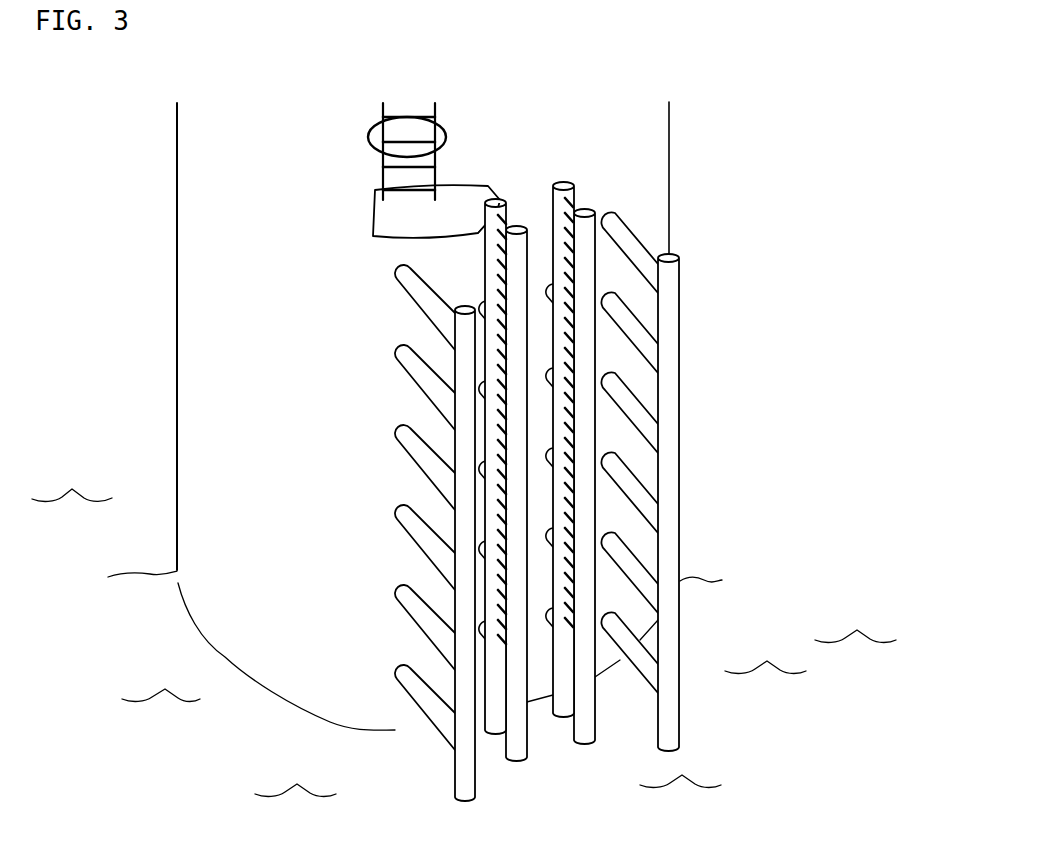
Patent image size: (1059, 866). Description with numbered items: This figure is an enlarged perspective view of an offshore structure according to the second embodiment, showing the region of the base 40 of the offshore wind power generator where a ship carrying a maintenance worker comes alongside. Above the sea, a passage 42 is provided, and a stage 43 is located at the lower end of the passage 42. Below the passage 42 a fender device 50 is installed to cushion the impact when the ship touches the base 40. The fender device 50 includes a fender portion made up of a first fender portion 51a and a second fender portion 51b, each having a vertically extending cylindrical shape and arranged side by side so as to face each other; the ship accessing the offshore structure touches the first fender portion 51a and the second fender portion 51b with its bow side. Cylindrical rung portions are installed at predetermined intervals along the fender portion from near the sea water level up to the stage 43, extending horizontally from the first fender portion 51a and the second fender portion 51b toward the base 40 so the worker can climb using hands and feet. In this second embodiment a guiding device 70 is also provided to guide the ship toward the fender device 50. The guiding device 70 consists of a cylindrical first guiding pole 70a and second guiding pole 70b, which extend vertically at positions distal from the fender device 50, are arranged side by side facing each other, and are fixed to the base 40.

The base 40 is at (658, 215).
The passage 42 is at (441, 116).
The stage 43 is at (387, 226).
The fender device 50 is at (619, 477).
The first fender portion 51a is at (517, 715).
The second fender portion 51b is at (585, 692).
The guiding device 70 is at (569, 535).
The first guiding pole 70a is at (462, 685).
The second guiding pole 70b is at (660, 448).